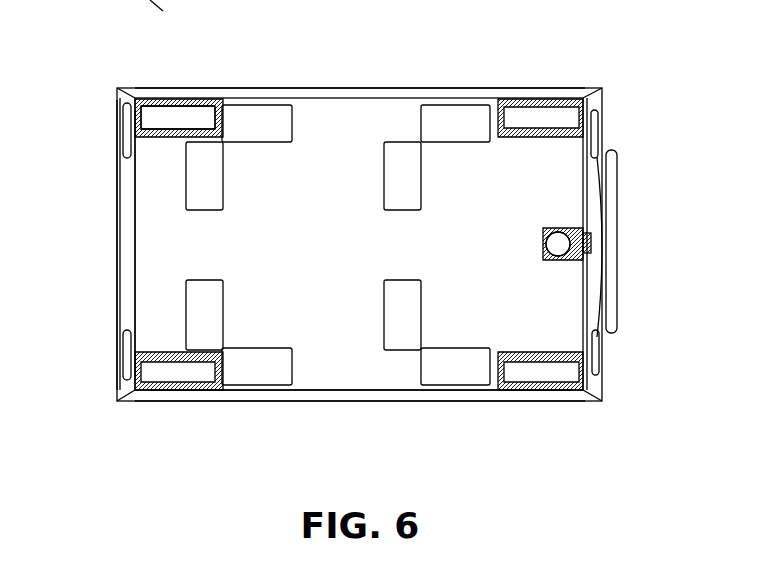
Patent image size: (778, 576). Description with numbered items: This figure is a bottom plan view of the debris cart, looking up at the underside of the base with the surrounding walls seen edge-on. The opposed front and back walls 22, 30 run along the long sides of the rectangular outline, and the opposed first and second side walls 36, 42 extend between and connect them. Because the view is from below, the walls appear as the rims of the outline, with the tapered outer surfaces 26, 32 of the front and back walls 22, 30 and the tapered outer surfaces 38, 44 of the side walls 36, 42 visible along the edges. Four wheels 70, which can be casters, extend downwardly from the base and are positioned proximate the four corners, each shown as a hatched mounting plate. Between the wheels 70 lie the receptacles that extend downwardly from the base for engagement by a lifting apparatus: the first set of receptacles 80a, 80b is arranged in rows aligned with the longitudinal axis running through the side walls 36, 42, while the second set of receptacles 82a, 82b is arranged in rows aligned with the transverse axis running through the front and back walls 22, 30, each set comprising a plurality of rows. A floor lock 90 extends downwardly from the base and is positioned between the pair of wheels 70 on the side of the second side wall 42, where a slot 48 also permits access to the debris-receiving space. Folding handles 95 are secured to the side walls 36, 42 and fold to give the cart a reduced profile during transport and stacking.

The front wall 22 is at (355, 401).
The outer surface of front wall 26 is at (412, 392).
The back wall 30 is at (232, 90).
The outer surface of back wall 32 is at (330, 88).
The first side wall 36 is at (127, 195).
The outer surface of first side wall 38 is at (126, 263).
The second side wall 42 is at (603, 170).
The outer surface of second side wall 44 is at (601, 300).
The slot 48 is at (592, 240).
The wheels 70 is at (158, 112).
The first set of receptacles 80a is at (273, 112).
The first set of receptacles 80b is at (447, 112).
The second set of receptacles 82a is at (215, 160).
The second set of receptacles 82b is at (215, 298).
The floor lock 90 is at (560, 256).
The folding handles 95 is at (122, 126).